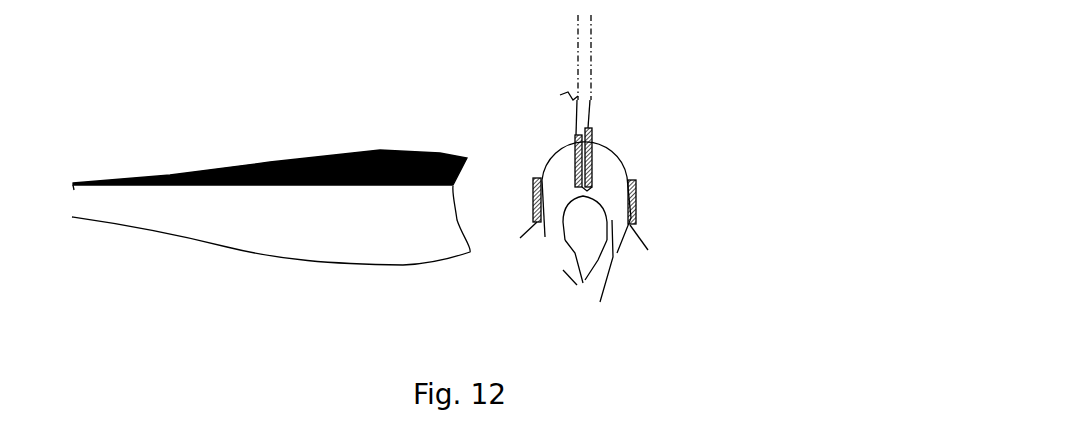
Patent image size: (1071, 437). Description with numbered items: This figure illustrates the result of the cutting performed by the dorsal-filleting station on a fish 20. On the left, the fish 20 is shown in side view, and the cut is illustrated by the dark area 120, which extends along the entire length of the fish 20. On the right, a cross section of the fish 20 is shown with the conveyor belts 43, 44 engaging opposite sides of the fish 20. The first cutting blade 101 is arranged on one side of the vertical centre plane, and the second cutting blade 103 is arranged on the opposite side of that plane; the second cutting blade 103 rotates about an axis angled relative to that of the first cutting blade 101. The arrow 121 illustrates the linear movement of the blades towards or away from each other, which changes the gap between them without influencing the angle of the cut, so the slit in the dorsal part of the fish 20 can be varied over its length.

The fish 20 is at (226, 220).
The cut 120 is at (327, 153).
The arrow 121 is at (500, 58).
The first cutting blade 101 is at (575, 148).
The second cutting blade 103 is at (591, 140).
The conveyor belt 44 is at (514, 232).
The conveyor belt 43 is at (649, 242).